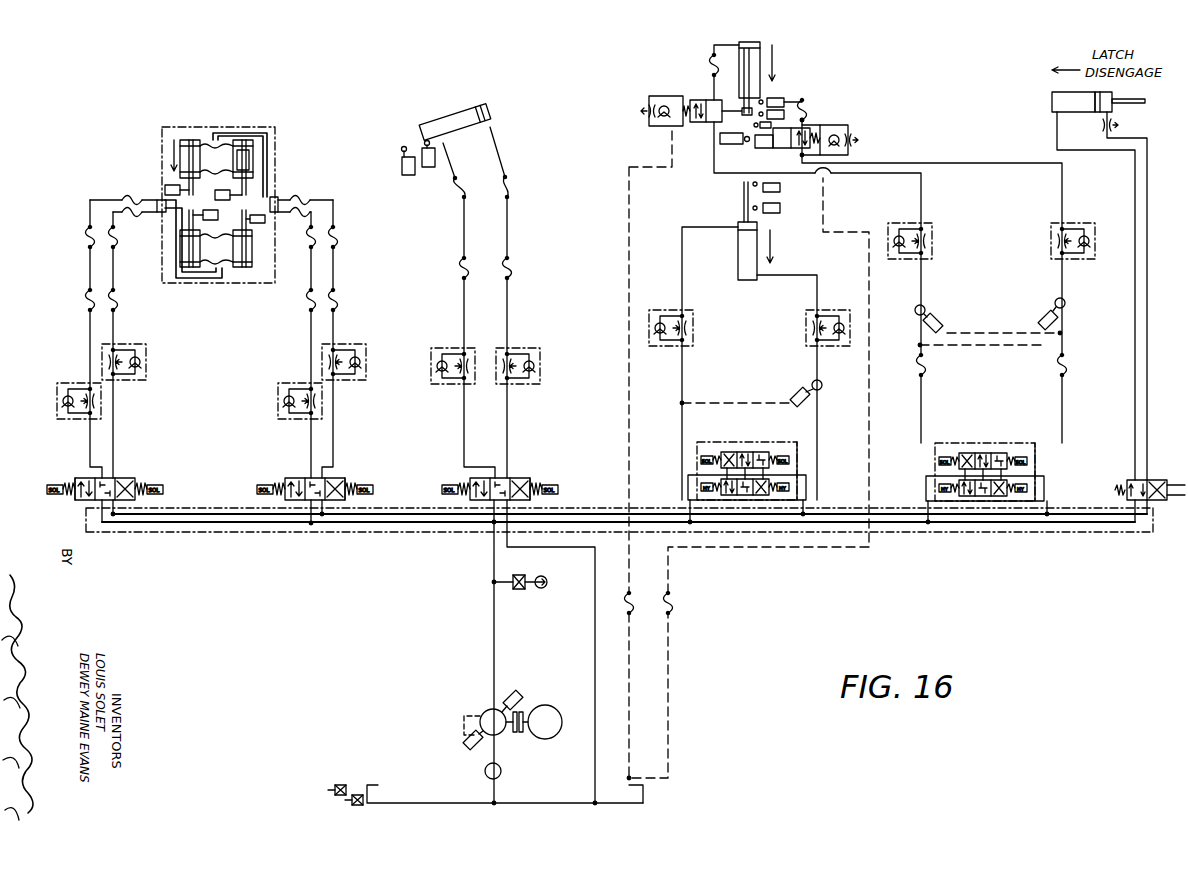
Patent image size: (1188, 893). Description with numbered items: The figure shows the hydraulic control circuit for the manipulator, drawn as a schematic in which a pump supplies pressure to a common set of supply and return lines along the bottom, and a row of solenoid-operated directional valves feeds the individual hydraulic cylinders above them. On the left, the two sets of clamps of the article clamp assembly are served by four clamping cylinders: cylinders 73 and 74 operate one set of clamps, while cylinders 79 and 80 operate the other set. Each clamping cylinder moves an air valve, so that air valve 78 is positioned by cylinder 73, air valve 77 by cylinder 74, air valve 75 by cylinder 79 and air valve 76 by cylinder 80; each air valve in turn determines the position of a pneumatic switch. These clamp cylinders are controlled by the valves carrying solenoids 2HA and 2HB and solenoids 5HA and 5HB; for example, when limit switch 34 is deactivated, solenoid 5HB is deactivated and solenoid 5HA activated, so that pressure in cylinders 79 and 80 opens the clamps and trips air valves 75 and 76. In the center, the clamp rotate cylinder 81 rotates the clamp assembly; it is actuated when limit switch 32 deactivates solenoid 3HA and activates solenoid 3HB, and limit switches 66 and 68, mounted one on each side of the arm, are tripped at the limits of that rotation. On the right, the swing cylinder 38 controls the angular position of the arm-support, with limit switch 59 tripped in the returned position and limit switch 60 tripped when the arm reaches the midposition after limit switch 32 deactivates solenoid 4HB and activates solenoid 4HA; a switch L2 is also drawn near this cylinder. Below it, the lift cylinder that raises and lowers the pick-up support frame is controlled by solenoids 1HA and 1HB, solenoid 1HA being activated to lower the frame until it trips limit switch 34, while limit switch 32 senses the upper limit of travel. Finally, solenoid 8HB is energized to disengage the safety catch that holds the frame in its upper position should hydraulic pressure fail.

The hydraulic cylinder 79 is at (183, 155).
The hydraulic cylinder 80 is at (250, 162).
The air valve 75 is at (166, 189).
The air valve 76 is at (232, 197).
The air valve 77 is at (266, 221).
The air valve 78 is at (212, 218).
The hydraulic cylinder 73 is at (184, 250).
The hydraulic cylinder 74 is at (250, 250).
The clamp rotate cylinder 81 is at (453, 118).
The limit switch 68 is at (408, 175).
The limit switch 66 is at (432, 167).
The swing cylinder 38 is at (762, 44).
The limit switch 59 is at (785, 100).
The limit switch 60 is at (787, 114).
The limit switch 32 is at (780, 188).
The limit switch 34 is at (780, 208).
The limit switch L2 is at (731, 146).
The solenoid 2HA is at (101, 481).
The solenoid 2HB is at (122, 481).
The solenoid 5HA is at (315, 481).
The solenoid 5HB is at (354, 481).
The solenoid 3HA is at (489, 481).
The solenoid 3HB is at (534, 479).
The solenoid 1HB is at (747, 462).
The solenoid 1HA is at (780, 462).
The solenoid 4HA is at (985, 464).
The solenoid 4HB is at (1017, 464).
The solenoid 8HB is at (1150, 491).